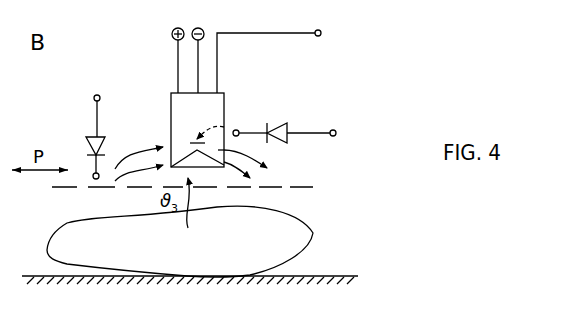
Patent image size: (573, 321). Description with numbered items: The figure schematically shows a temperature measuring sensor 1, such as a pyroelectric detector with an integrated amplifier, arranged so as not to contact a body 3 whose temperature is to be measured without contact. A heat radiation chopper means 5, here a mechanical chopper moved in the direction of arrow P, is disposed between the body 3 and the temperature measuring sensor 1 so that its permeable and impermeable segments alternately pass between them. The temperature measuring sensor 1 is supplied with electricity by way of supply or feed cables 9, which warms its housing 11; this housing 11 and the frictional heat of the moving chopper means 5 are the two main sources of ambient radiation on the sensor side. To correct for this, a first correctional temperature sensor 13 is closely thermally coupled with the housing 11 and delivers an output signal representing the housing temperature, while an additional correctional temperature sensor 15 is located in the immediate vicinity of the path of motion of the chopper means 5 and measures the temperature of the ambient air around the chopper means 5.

The temperature measuring sensor 1 is at (274, 116).
The body 3 is at (297, 233).
The heat radiation chopper means 5 is at (308, 185).
The supply or feed cables 9 is at (198, 69).
The housing 11 is at (224, 107).
The first correctional temperature sensor 13 is at (287, 146).
The additional correctional temperature sensor 15 is at (87, 137).